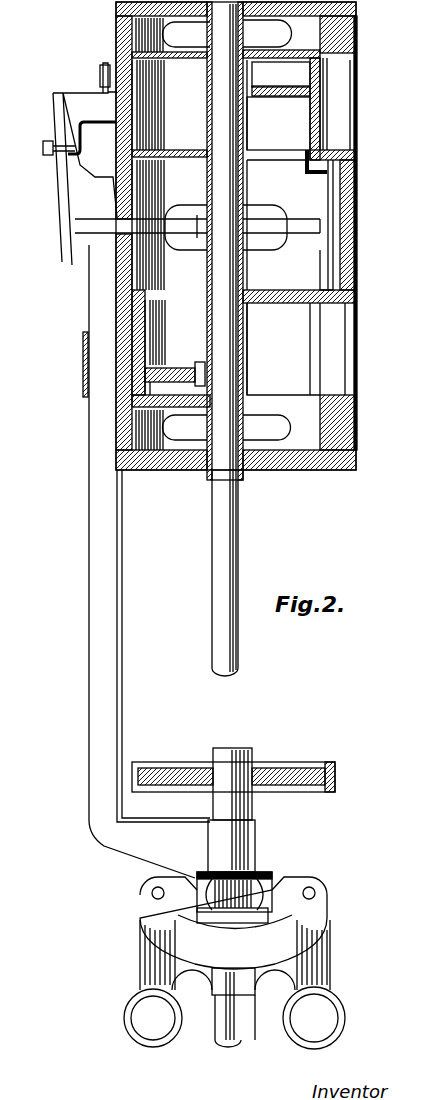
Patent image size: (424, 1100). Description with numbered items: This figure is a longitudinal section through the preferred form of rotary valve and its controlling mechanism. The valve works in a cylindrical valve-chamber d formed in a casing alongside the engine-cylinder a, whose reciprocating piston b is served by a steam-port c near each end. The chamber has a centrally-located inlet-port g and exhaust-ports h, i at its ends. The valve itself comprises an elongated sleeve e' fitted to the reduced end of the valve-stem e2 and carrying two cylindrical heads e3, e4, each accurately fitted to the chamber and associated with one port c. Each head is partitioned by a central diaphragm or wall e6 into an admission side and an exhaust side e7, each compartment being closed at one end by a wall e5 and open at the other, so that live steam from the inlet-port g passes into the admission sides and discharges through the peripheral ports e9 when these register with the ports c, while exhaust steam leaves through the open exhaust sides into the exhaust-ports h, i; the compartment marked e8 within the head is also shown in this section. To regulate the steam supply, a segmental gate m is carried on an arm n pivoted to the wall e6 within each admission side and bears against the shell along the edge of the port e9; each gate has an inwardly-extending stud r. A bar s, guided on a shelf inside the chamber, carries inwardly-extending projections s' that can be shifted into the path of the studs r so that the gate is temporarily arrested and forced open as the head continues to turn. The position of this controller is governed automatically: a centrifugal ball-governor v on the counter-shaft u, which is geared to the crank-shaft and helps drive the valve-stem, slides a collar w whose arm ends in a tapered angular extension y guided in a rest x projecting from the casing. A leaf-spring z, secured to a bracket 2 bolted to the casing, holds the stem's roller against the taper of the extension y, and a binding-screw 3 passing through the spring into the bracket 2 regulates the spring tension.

The exhaust-port h is at (117, 30).
The cylindrical head e3 is at (157, 84).
The exhaust side e7 is at (226, 227).
The arm n is at (227, 224).
The peripheral port e9 is at (322, 90).
The steam-port c is at (345, 106).
The gate m is at (322, 133).
The chamber e8 is at (235, 225).
The binding-screw 3 is at (42, 148).
The bracket 2 is at (80, 140).
The leaf-spring z is at (52, 190).
The diaphragm or wall e6 is at (154, 225).
The partition f is at (144, 277).
The inlet-port g is at (266, 205).
The lateral stud r is at (308, 172).
The inwardly-extending projection s' is at (315, 228).
The engine-cylinder a is at (361, 225).
The bar s is at (350, 225).
The reciprocating piston b is at (351, 270).
The wall or head e5 is at (278, 290).
The cylindrical head e4 is at (156, 347).
The elongated sleeve e' is at (259, 349).
The rest x is at (84, 382).
The exhaust-port i is at (176, 460).
The valve-chamber d is at (326, 470).
The valve-stem e2 is at (245, 556).
The angular extension y is at (108, 600).
The counter-shaft u is at (255, 805).
The collar w is at (262, 875).
The ball-governor v is at (243, 963).